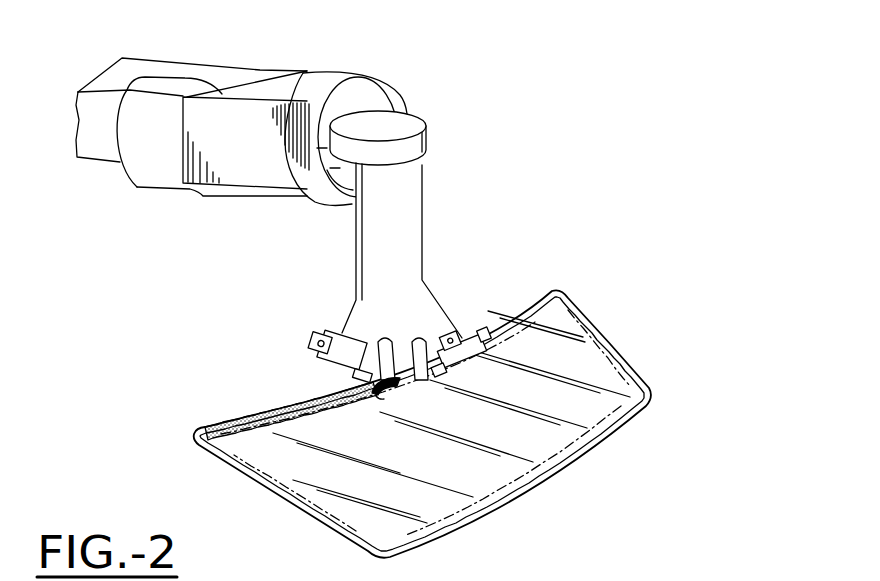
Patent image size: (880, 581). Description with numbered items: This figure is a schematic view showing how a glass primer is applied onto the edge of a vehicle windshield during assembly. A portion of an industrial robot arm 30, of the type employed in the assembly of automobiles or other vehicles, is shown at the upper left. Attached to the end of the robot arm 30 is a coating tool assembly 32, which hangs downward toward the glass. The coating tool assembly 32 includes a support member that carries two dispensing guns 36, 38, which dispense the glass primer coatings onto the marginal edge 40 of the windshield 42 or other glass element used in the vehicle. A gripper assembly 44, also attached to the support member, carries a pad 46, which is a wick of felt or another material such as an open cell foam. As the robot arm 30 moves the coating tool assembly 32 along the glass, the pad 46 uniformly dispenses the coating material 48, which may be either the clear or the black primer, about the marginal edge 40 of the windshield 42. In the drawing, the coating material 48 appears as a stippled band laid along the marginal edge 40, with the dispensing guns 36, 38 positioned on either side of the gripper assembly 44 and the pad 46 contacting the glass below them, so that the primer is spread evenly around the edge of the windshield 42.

The industrial robot arm 30 is at (373, 71).
The coating tool assembly 32 is at (453, 227).
The dispensing gun 36 is at (330, 335).
The dispensing gun 38 is at (462, 337).
The marginal edge 40 is at (547, 307).
The windshield 42 is at (622, 347).
The gripper assembly 44 is at (397, 343).
The pad 46 is at (390, 390).
The coating material 48 is at (260, 417).